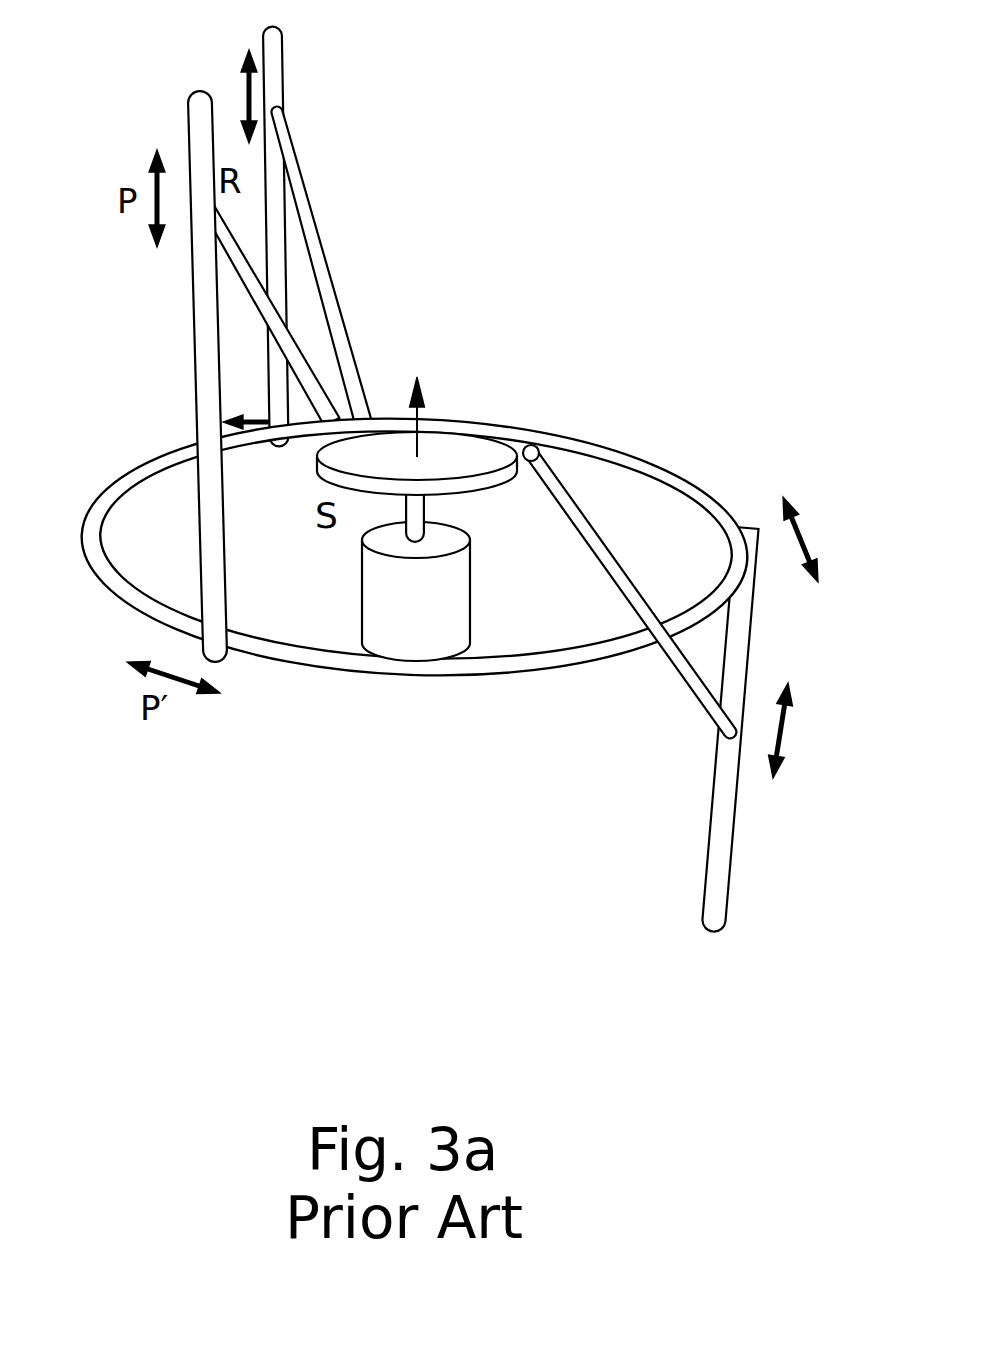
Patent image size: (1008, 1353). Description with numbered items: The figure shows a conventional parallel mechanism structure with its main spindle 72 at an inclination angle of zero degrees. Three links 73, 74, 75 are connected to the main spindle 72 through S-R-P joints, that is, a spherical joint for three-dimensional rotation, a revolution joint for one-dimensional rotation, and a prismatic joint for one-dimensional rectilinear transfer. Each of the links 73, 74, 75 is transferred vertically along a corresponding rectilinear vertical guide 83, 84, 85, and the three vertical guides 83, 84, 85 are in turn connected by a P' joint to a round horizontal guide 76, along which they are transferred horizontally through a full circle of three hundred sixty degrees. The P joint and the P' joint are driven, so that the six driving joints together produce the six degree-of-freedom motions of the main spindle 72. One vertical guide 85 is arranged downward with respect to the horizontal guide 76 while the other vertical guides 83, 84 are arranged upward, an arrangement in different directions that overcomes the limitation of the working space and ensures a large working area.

The main spindle 72 is at (461, 452).
The link 73 is at (323, 243).
The link 74 is at (305, 412).
The link 75 is at (600, 540).
The round horizontal guide 76 is at (570, 670).
The vertical guide 83 is at (275, 52).
The vertical guide 84 is at (195, 123).
The vertical guide 85 is at (728, 890).